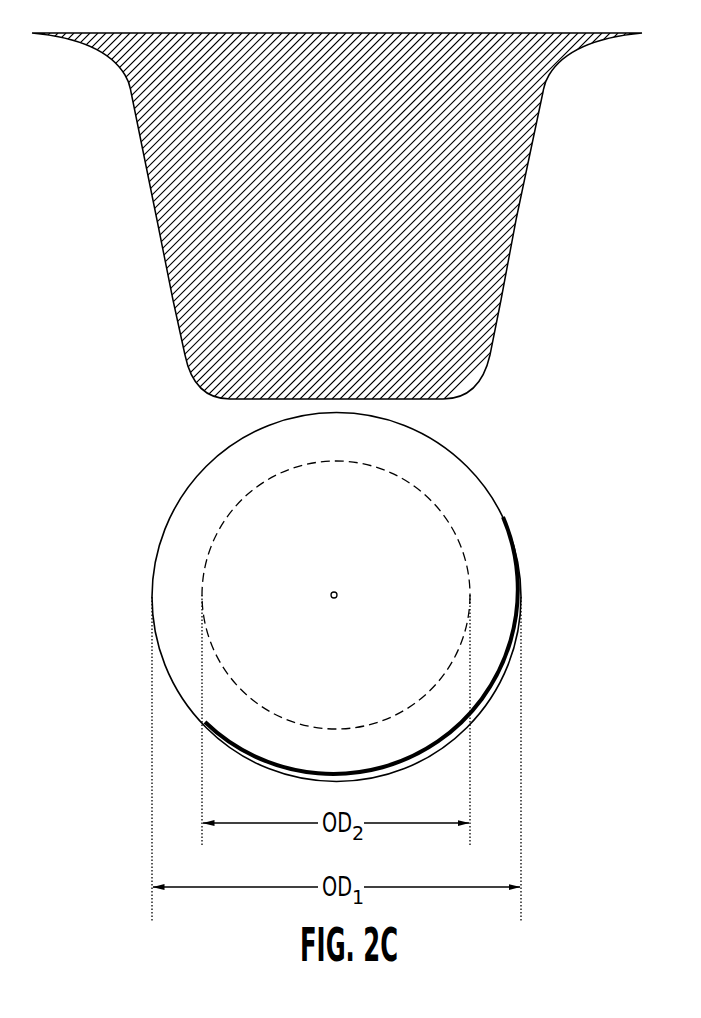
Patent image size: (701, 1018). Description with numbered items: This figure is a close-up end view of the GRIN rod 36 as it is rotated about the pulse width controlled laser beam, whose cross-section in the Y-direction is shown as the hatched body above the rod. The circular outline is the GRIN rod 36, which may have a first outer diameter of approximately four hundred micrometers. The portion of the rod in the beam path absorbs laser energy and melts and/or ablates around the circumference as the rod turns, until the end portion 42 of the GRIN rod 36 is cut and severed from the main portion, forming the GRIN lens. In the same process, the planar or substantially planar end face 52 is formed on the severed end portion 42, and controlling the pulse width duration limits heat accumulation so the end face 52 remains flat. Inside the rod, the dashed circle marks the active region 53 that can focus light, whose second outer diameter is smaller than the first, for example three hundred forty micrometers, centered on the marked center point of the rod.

The GRIN rod 36 is at (467, 461).
The end portion 42 is at (516, 531).
The end face 52 is at (473, 663).
The active region 53 is at (394, 588).